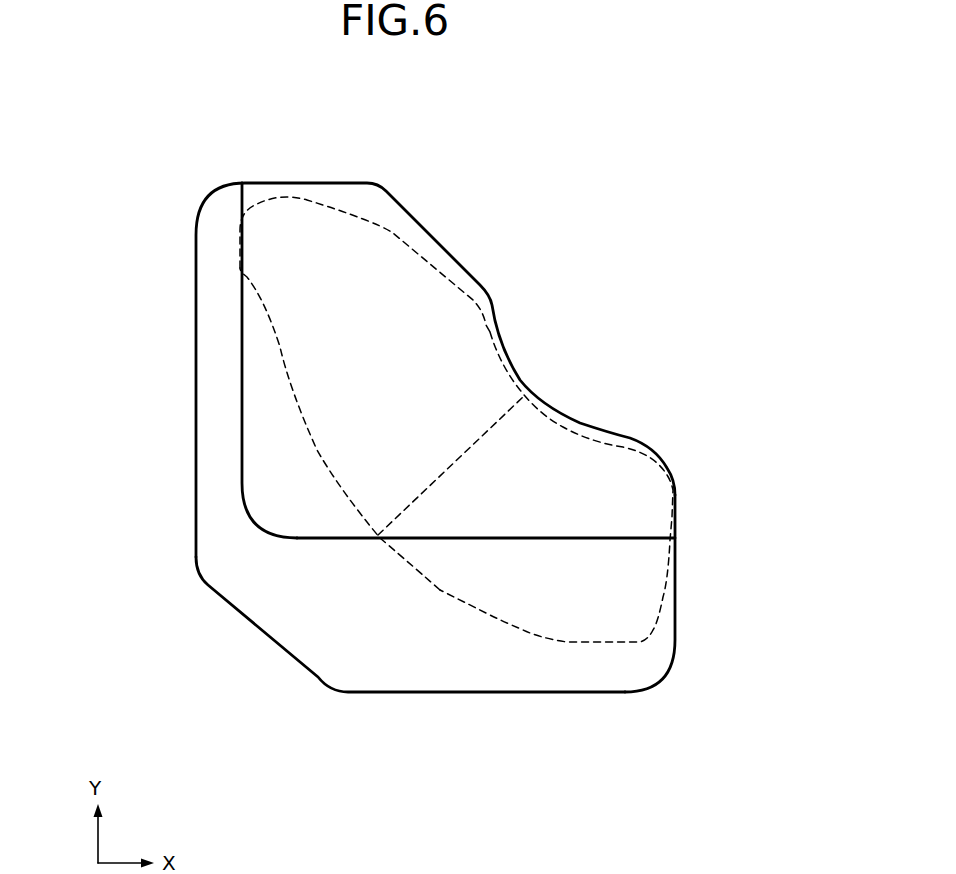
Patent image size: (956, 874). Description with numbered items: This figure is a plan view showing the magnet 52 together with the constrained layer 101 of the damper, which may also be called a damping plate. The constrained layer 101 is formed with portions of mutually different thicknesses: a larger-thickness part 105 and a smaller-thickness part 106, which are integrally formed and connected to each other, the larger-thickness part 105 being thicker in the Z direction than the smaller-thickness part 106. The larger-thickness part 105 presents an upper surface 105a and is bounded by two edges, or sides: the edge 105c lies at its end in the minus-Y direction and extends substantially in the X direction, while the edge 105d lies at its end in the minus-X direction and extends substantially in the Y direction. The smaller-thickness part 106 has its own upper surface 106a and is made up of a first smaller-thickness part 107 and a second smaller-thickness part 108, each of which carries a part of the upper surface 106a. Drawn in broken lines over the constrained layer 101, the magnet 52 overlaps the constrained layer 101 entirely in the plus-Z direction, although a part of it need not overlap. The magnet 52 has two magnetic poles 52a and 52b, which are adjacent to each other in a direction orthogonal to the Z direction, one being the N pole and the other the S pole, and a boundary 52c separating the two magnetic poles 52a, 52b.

The magnet 52 is at (526, 363).
The magnetic pole 52a is at (305, 233).
The magnetic pole 52b is at (653, 497).
The boundary 52c is at (492, 430).
The constrained layer 101 is at (364, 483).
The larger-thickness part 105 is at (435, 370).
The upper surface 105a is at (460, 272).
The edge 105c is at (503, 540).
The edge 105d is at (243, 397).
The smaller-thickness part 106 is at (410, 691).
The upper surface 106a is at (410, 624).
The first smaller-thickness part 107 is at (403, 678).
The second smaller-thickness part 108 is at (175, 360).